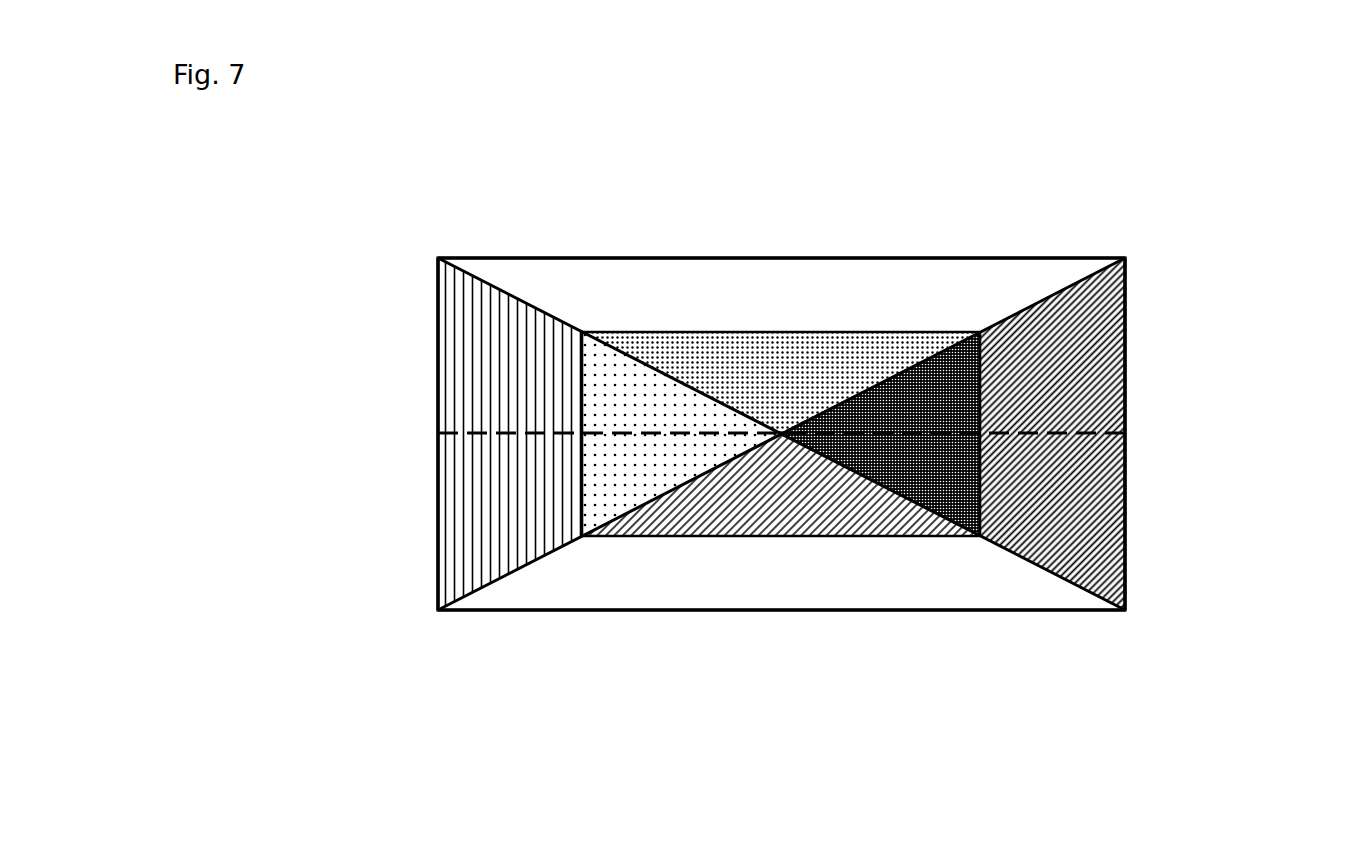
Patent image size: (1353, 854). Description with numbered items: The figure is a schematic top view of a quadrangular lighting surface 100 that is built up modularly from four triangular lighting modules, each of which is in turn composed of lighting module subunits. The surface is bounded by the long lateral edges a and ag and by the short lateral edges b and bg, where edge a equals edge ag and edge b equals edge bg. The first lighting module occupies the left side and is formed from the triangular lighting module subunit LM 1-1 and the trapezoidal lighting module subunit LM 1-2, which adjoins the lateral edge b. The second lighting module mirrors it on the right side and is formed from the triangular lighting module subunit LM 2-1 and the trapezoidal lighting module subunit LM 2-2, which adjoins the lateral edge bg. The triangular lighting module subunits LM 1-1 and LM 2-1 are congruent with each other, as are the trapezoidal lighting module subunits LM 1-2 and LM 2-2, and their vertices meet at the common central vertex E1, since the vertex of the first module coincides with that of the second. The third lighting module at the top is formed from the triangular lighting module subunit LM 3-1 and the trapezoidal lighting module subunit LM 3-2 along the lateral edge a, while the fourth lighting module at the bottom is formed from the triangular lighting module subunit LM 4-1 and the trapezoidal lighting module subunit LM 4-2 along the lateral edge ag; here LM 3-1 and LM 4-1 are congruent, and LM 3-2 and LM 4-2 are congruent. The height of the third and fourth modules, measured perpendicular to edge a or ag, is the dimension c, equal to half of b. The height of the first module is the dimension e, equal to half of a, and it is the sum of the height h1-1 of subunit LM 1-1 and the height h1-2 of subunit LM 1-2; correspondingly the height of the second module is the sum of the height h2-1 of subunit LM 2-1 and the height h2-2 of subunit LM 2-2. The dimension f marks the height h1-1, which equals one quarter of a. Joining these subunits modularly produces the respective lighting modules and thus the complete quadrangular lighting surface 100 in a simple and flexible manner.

The quadrangular lighting surface 100 is at (1228, 208).
The lighting module subunit LM 1-1 is at (633, 470).
The lighting module subunit LM 1-2 is at (493, 455).
The lighting module subunit LM 2-1 is at (932, 466).
The lighting module subunit LM 2-2 is at (1075, 458).
The lighting module subunit LM 3-1 is at (820, 367).
The lighting module subunit LM 3-2 is at (963, 291).
The lighting module subunit LM 4-1 is at (830, 504).
The lighting module subunit LM 4-2 is at (935, 566).
The lateral edge a is at (703, 258).
The lateral edge ag is at (723, 612).
The lateral edge b is at (438, 400).
The lateral edge bg is at (1125, 412).
The height of third and fourth lighting modules c is at (675, 433).
The height of first lighting module e is at (773, 158).
The height of lighting module subunit LM1-1 f is at (773, 83).
The height of lighting module subunit LM1-1 h1-1 is at (623, 432).
The height of lighting module subunit LM1-2 h1-2 is at (520, 432).
The height of lighting module subunit LM2-1 h2-1 is at (940, 432).
The height of lighting module subunit LM2-2 h2-2 is at (1044, 433).
The vertex E1 is at (780, 440).